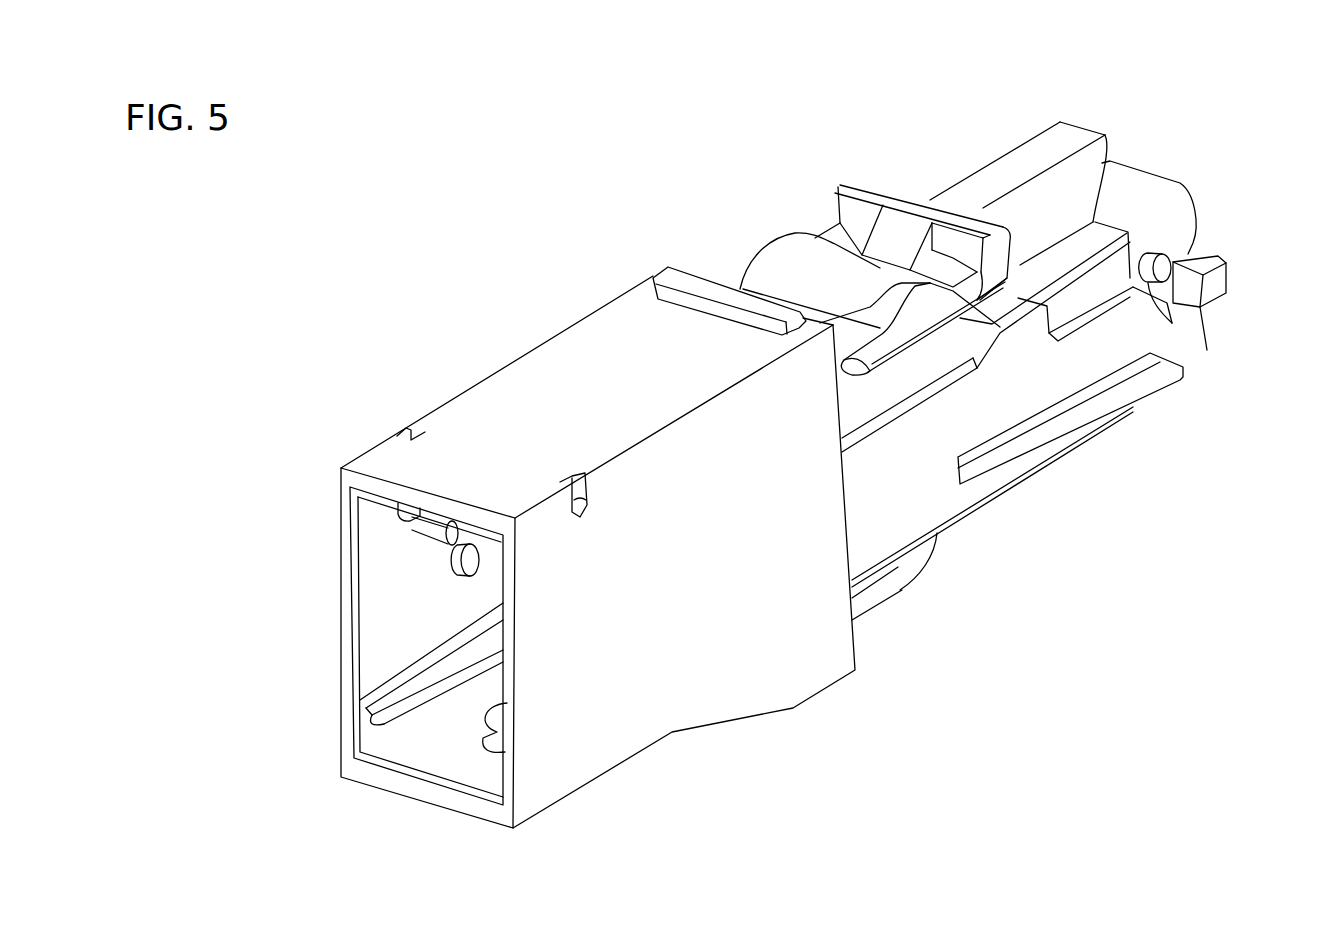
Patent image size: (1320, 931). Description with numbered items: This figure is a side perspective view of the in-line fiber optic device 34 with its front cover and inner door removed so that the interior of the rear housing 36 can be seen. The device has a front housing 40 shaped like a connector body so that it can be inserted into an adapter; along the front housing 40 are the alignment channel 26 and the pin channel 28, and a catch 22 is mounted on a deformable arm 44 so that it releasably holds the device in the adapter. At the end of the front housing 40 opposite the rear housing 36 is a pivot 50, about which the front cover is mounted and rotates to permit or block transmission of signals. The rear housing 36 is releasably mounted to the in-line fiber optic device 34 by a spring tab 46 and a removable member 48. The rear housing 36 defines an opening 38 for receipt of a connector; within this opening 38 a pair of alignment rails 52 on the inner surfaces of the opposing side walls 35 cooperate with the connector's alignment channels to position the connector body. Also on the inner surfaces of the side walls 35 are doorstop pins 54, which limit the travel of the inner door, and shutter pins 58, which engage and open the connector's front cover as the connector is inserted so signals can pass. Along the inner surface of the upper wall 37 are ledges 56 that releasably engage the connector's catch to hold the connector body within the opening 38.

The catch 22 is at (862, 213).
The alignment channel 26 is at (1100, 397).
The pin channel 28 is at (1100, 288).
The in-line fiber optic device 34 is at (890, 130).
The side walls 35 is at (700, 599).
The rear housing 36 is at (515, 342).
The upper wall 37 is at (618, 407).
The opening 38 is at (368, 602).
The front housing 40 is at (1032, 492).
The deformable arm 44 is at (772, 262).
The spring tab 46 is at (880, 592).
The removable member 48 is at (665, 282).
The pivot 50 is at (1162, 266).
The alignment rails 52 is at (385, 703).
The doorstop pins 54 is at (430, 530).
The ledges 56 is at (407, 510).
The shutter pins 58 is at (458, 575).